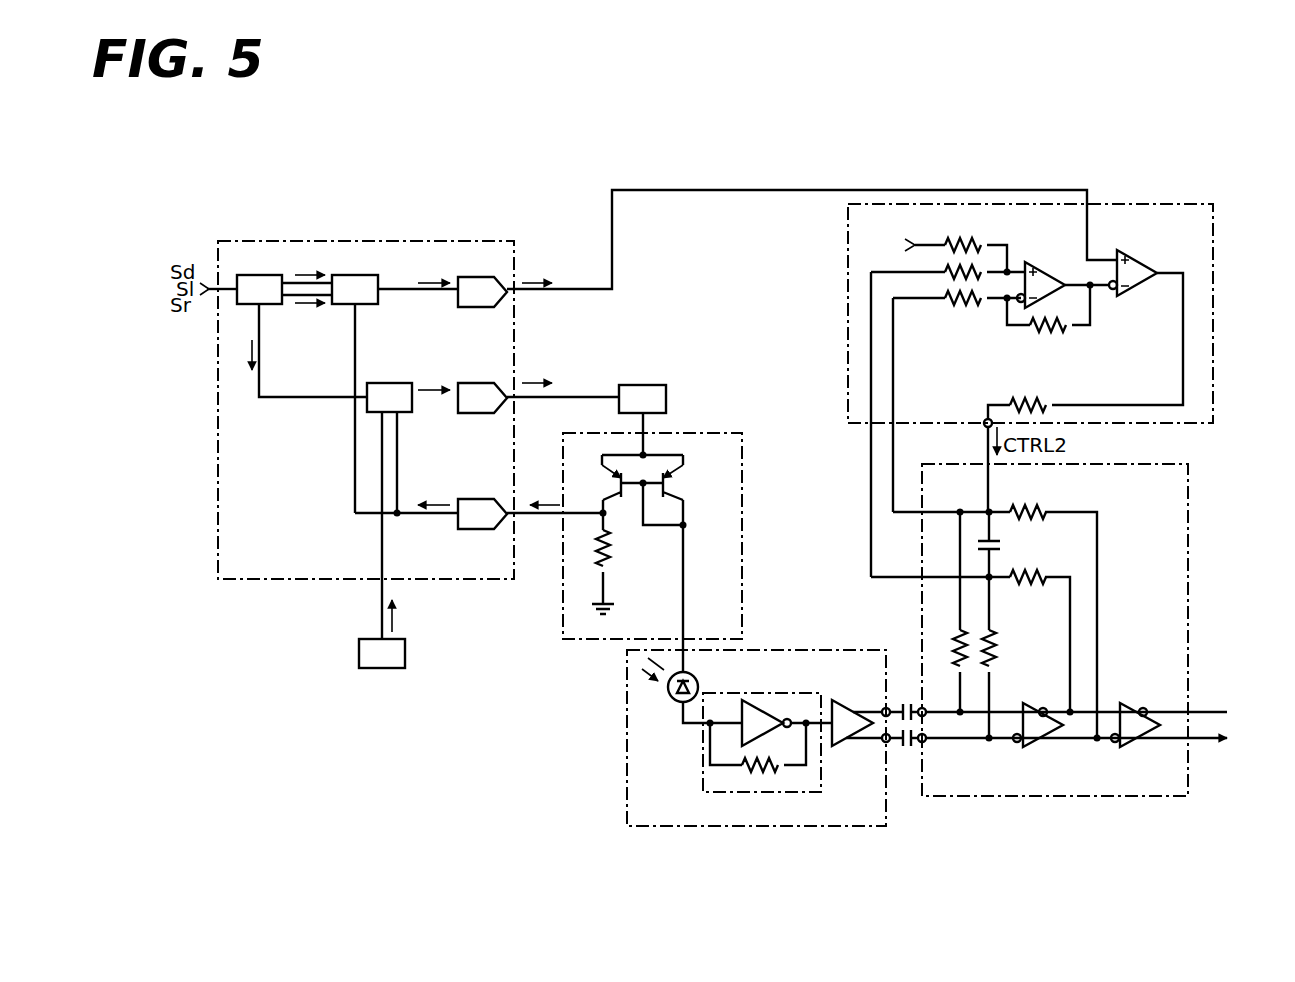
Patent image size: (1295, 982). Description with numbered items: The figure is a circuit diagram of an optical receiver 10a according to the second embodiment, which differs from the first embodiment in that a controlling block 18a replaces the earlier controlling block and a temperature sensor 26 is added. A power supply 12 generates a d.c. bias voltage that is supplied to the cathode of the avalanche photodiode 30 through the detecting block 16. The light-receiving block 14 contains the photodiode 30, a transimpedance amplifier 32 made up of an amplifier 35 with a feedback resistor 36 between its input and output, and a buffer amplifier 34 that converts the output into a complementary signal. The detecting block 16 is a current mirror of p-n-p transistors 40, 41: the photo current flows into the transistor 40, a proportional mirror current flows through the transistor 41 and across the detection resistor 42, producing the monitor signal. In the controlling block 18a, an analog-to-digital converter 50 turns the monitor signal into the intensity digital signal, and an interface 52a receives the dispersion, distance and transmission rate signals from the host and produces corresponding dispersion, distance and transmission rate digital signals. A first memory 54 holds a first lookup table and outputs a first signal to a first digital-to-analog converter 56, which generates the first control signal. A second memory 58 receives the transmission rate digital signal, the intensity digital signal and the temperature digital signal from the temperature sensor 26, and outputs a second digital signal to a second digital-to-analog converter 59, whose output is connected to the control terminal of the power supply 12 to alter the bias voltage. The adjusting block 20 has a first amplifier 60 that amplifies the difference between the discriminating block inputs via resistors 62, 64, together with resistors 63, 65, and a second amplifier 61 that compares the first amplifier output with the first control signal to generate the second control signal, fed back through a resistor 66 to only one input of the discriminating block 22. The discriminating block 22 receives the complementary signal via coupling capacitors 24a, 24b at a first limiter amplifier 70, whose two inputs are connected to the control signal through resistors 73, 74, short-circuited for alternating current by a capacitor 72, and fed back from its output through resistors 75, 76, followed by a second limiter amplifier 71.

The optical receiver 10a is at (1224, 210).
The controlling block 18a is at (364, 241).
The interface 52a is at (272, 304).
The first memory 54 is at (366, 304).
The first digital-to-analog converter 56 is at (478, 307).
The second memory 58 is at (404, 412).
The second digital-to-analog converter 59 is at (478, 412).
The analog-to-digital converter 50 is at (478, 528).
The temperature sensor 26 is at (405, 655).
The power supply 12 is at (666, 397).
The detecting block 16 is at (742, 458).
The p-n-p transistor 41 is at (612, 492).
The p-n-p transistor 40 is at (672, 490).
The detection resistor 42 is at (608, 548).
The light-receiving block 14 is at (773, 650).
The semiconductor light-receiving element 30 is at (675, 703).
The transimpedance amplifier 32 is at (747, 690).
The amplifier 35 is at (770, 712).
The feedback resistor 36 is at (753, 770).
The amplifier 34 is at (843, 748).
The coupling capacitor 24a is at (901, 749).
The coupling capacitor 24b is at (901, 702).
The adjusting block 20 is at (1213, 340).
The resistor 63 is at (975, 240).
The resistor 62 is at (944, 272).
The resistor 64 is at (962, 305).
The first amplifier 60 is at (1040, 272).
The resistor 65 is at (1042, 332).
The second amplifier 61 is at (1135, 292).
The resistor 66 is at (1045, 400).
The discriminating block 22 is at (1188, 523).
The resistor 76 is at (1043, 507).
The coupling capacitor 72 is at (998, 540).
The resistor 75 is at (1043, 572).
The resistor 73 is at (997, 660).
The resistor 74 is at (958, 664).
The first limiter amplifier 70 is at (1035, 749).
The second limiter amplifier 71 is at (1132, 749).